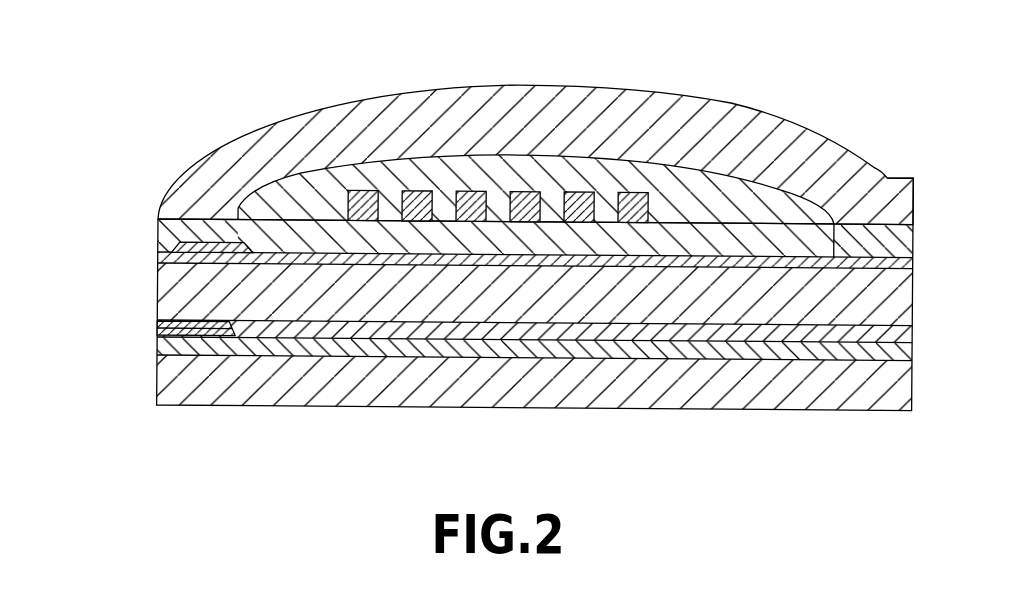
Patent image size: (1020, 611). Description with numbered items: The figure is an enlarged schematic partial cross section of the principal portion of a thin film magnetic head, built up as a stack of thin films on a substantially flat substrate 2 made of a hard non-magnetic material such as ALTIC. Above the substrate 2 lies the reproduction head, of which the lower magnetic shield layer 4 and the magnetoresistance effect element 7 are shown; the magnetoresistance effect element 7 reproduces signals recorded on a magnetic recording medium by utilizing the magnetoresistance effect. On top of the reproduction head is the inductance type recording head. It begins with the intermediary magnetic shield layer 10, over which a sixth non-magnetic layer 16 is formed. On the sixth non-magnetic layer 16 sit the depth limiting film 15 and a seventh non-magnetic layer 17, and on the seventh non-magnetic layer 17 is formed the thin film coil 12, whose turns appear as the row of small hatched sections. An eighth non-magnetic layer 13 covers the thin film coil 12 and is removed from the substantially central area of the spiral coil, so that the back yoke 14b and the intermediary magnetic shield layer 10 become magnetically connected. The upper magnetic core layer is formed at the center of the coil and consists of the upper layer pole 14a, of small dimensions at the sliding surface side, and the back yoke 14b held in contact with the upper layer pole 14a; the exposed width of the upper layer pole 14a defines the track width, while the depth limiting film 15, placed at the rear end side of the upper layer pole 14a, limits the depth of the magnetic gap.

The substrate 2 is at (818, 385).
The lower magnetic shield layer 4 is at (722, 348).
The magnetoresistance effect element 7 is at (158, 325).
The intermediary magnetic shield layer 10 is at (652, 298).
The thin film coil 12 is at (349, 221).
The eighth non-magnetic layer 13 is at (665, 178).
The upper layer pole 14a is at (867, 230).
The back yoke 14b is at (790, 135).
The depth limiting film 15 is at (212, 243).
The sixth non-magnetic layer 16 is at (160, 256).
The seventh non-magnetic layer 17 is at (693, 237).